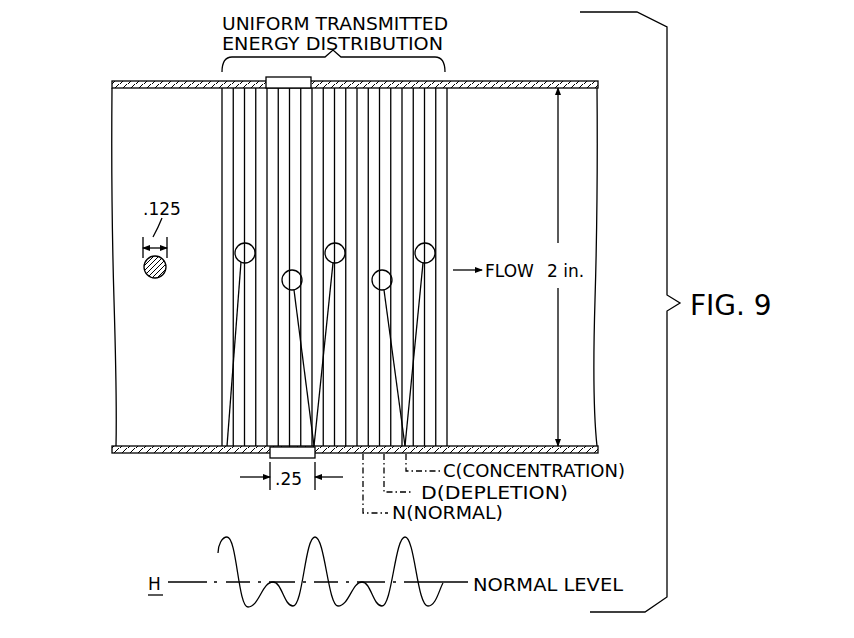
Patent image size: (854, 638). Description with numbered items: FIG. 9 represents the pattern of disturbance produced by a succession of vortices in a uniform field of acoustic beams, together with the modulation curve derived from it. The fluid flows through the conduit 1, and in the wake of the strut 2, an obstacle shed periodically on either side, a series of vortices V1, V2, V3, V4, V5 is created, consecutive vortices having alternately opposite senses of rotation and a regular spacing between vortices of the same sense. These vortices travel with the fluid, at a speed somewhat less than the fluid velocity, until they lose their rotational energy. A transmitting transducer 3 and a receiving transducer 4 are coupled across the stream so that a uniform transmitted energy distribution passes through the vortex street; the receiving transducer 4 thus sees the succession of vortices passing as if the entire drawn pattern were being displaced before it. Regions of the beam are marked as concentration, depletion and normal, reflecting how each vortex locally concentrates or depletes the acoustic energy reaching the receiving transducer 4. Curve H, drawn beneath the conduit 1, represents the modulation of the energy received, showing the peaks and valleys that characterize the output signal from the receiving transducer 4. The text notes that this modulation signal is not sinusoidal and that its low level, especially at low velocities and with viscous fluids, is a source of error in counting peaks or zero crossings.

The conduit 1 is at (145, 80).
The strut 2 is at (163, 277).
The transmitting transducer 3 is at (305, 78).
The receiving transducer 4 is at (270, 454).
The vortex V1 is at (247, 263).
The vortex V2 is at (287, 289).
The vortex V3 is at (338, 265).
The vortex V4 is at (377, 291).
The vortex V5 is at (421, 244).